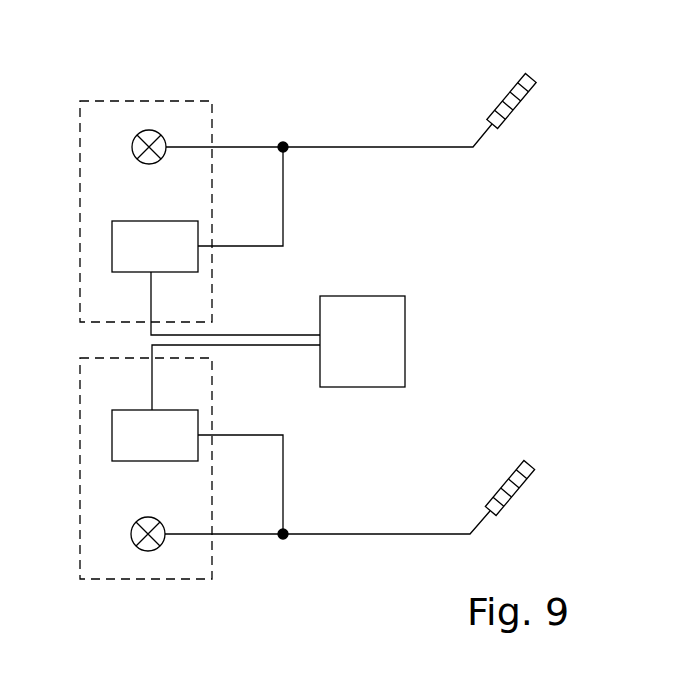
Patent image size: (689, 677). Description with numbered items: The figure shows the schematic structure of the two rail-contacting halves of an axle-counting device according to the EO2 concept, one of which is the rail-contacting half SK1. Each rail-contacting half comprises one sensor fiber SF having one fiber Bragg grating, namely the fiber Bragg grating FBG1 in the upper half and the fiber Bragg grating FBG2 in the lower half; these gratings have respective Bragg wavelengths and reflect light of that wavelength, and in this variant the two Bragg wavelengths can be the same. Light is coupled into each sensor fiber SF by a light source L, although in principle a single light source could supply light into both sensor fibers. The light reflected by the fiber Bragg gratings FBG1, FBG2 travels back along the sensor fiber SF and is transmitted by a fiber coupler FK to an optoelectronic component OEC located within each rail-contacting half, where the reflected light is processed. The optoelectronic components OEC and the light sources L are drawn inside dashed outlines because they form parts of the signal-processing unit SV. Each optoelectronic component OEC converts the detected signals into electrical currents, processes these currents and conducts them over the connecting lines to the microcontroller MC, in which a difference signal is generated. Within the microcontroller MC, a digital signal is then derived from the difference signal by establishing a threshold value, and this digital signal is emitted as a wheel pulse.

The signal-processing unit SV is at (80, 295).
The microcontroller MC is at (362, 341).
The optoelectronic component OEC is at (197, 340).
The light source L is at (149, 130).
The sensor fiber SF is at (370, 146).
The fiber coupler FK is at (284, 346).
The fiber Bragg grating FBG1 is at (504, 122).
The fiber Bragg grating FBG2 is at (505, 509).
The rail-contacting half SK1 is at (503, 200).